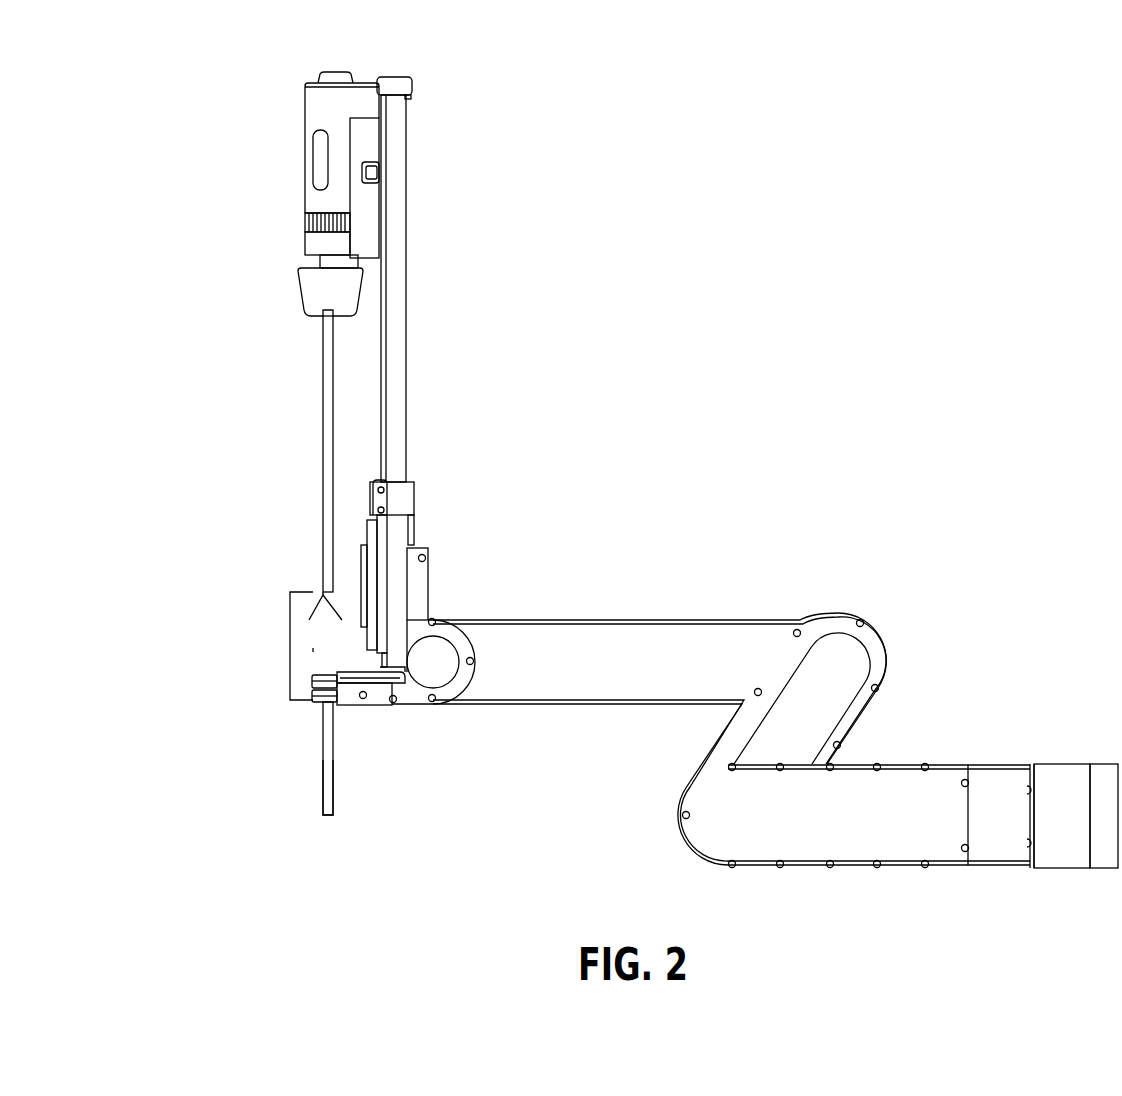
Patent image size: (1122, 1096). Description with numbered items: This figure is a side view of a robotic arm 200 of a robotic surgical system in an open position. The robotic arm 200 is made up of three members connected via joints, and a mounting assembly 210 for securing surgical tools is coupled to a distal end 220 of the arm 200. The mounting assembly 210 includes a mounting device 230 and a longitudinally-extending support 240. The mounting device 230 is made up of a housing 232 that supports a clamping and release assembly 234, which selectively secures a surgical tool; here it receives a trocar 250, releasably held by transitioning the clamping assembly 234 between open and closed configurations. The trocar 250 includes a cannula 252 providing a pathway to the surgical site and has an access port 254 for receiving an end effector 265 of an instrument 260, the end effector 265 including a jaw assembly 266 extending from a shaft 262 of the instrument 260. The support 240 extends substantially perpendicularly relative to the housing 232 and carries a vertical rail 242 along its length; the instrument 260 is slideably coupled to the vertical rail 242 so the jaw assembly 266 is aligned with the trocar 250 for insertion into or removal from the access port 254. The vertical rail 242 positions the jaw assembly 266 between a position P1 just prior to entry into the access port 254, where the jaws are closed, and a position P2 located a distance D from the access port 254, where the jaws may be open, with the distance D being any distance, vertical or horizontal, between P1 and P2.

The robotic arm 200 is at (710, 540).
The mounting assembly 210 is at (413, 287).
The distal end 220 is at (393, 711).
The mounting device 230 is at (355, 711).
The housing 232 is at (373, 708).
The clamping and release assembly 234 is at (313, 680).
The longitudinally-extending support 240 is at (407, 205).
The vertical rail 242 is at (381, 378).
The trocar 250 is at (300, 791).
The cannula 252 is at (327, 742).
The access port 254 is at (315, 700).
The instrument 260 is at (293, 205).
The shaft 262 is at (323, 365).
The end effector 265 is at (306, 559).
The jaw assembly 266 is at (350, 610).
The distance D is at (290, 635).
The position P1 is at (313, 650).
The position P2 is at (323, 593).